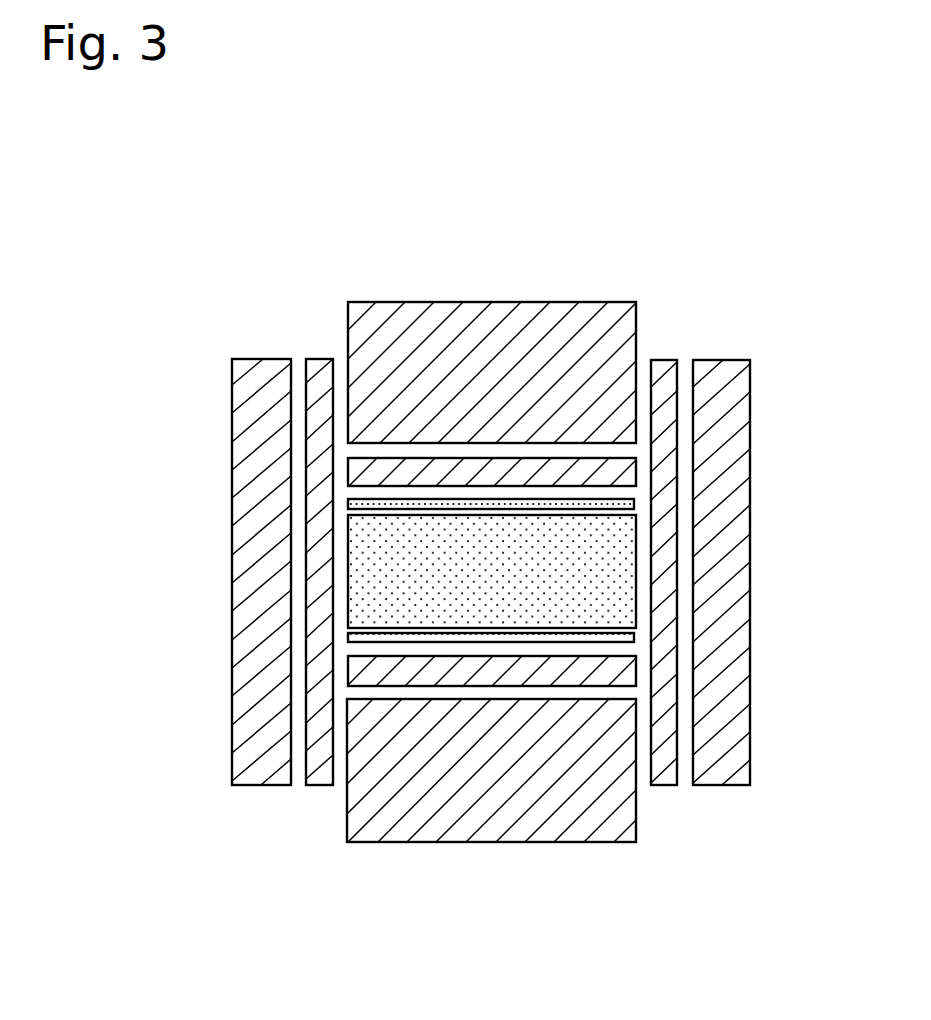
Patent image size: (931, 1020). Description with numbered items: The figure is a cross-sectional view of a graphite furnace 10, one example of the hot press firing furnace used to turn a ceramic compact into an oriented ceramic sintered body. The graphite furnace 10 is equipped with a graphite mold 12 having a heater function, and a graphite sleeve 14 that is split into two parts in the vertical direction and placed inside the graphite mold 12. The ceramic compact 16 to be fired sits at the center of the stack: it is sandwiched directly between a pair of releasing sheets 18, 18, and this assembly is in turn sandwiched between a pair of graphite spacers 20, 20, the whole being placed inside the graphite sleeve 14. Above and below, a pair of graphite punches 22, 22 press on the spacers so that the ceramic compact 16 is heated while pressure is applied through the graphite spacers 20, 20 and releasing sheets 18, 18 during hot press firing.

The graphite furnace 10 is at (632, 247).
The graphite mold 12 is at (730, 367).
The graphite sleeve 14 is at (667, 368).
The ceramic compact 16 is at (605, 582).
The releasing sheets 18 is at (628, 505).
The graphite spacers 20 is at (622, 478).
The graphite punches 22 is at (620, 432).